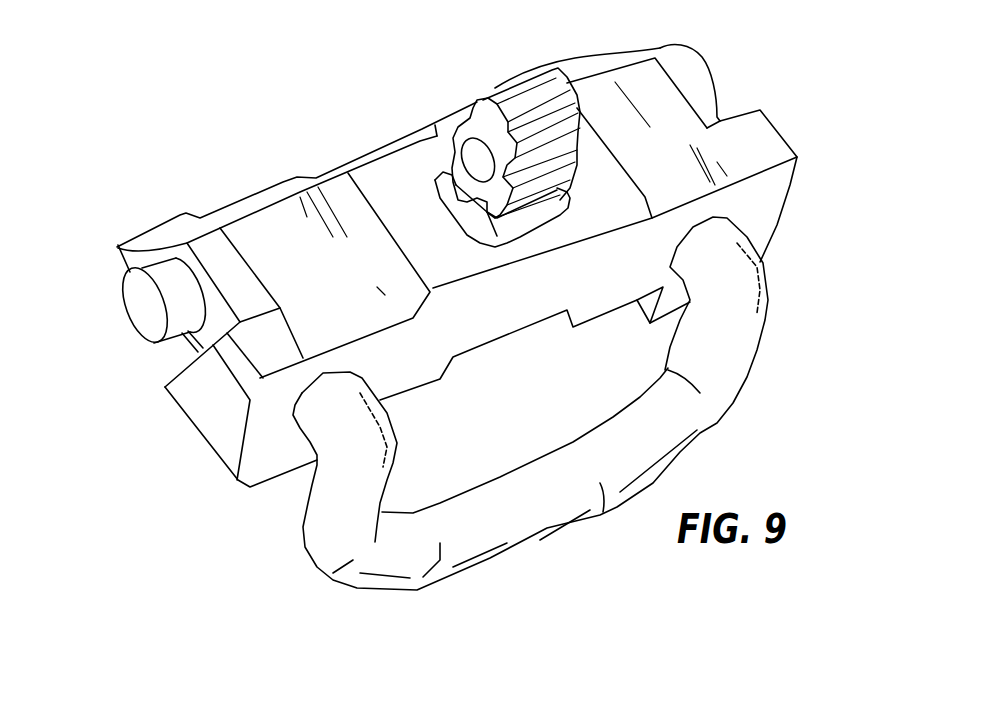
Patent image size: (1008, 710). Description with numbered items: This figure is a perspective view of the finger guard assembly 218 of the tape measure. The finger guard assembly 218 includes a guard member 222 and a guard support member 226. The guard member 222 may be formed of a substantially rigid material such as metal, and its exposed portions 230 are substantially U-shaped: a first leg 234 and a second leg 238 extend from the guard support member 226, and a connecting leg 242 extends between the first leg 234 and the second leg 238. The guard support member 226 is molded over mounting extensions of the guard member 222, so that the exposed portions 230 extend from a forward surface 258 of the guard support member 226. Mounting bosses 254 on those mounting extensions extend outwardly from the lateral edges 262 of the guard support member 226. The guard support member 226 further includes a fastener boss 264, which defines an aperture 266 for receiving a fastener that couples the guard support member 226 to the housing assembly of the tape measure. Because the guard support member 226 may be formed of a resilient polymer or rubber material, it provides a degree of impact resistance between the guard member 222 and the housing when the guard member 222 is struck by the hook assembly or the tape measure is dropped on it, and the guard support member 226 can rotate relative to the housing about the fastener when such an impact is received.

The finger guard assembly 218 is at (461, 310).
The guard member 222 is at (764, 316).
The guard support member 226 is at (373, 160).
The exposed portions 230 is at (534, 415).
The first leg 234 is at (323, 537).
The second leg 238 is at (727, 350).
The connecting leg 242 is at (510, 538).
The mounting boss 254 is at (137, 290).
The forward surface 258 is at (770, 190).
The lateral edges 262 is at (185, 345).
The fastener boss 264 is at (453, 127).
The aperture 266 is at (480, 155).